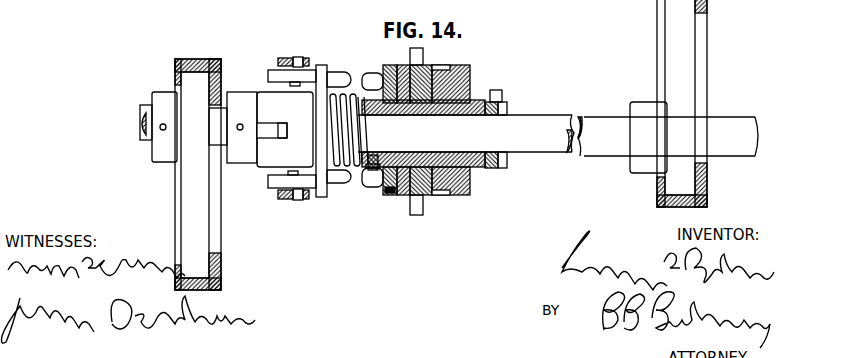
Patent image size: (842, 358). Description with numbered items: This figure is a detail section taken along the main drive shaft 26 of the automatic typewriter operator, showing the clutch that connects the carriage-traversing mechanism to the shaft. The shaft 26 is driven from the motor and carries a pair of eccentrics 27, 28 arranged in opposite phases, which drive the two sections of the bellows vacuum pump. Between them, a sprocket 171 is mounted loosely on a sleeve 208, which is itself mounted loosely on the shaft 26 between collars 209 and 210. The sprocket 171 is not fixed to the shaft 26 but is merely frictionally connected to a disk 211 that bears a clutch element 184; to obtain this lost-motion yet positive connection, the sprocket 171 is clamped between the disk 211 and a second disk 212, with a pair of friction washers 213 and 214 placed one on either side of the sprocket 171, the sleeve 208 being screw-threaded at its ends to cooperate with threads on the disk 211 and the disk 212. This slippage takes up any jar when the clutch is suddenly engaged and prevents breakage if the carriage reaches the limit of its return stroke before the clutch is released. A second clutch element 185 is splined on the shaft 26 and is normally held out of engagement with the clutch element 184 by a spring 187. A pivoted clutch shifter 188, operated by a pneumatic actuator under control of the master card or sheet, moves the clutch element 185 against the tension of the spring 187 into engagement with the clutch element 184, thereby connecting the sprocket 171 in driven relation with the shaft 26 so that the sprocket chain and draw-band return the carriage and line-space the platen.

The shaft 26 is at (548, 152).
The eccentric 27 is at (180, 200).
The eccentric 28 is at (695, 75).
The sprocket 171 is at (432, 71).
The clutch element 184 is at (382, 72).
The clutch element 185 is at (336, 61).
The spring 187 is at (356, 129).
The clutch shifter 188 is at (282, 61).
The sleeve 208 is at (478, 100).
The collar 209 is at (363, 169).
The collar 210 is at (508, 109).
The disk 211 is at (388, 64).
The disk 212 is at (440, 194).
The friction washer 213 is at (397, 194).
The friction washer 214 is at (427, 196).